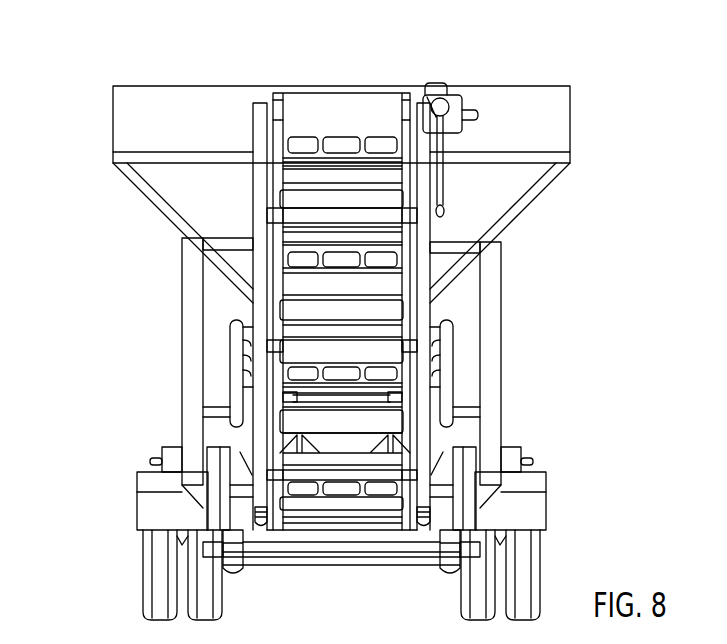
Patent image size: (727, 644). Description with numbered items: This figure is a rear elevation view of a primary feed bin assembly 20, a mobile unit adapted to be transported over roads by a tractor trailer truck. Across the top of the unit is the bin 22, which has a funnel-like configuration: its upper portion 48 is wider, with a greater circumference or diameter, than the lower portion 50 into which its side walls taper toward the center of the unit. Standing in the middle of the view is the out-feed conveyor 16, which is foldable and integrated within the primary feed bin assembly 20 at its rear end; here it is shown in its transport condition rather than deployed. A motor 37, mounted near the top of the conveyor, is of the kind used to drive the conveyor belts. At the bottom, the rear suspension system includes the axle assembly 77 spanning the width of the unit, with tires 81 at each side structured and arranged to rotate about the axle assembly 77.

The primary feed bin assembly 20 is at (78, 85).
The bin 22 is at (208, 90).
The motor 37 is at (456, 117).
The upper portion 48 is at (146, 167).
The out-feed conveyor 16 is at (236, 218).
The lower portion 50 is at (255, 271).
The tire 81 is at (160, 570).
The axle assembly 77 is at (315, 560).